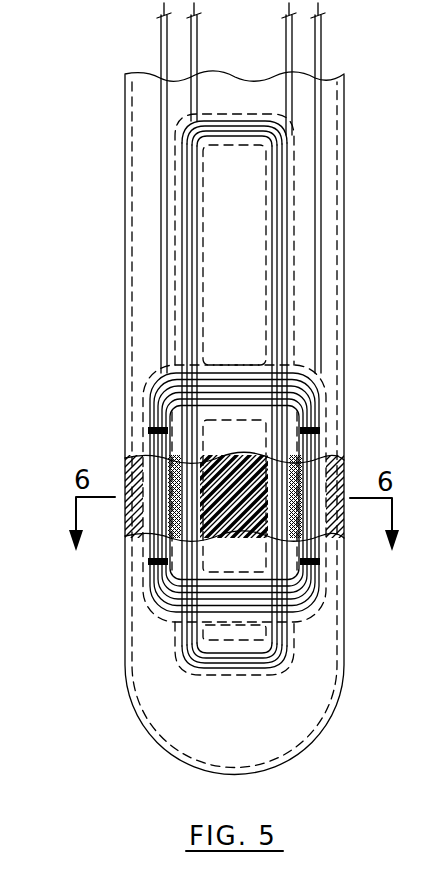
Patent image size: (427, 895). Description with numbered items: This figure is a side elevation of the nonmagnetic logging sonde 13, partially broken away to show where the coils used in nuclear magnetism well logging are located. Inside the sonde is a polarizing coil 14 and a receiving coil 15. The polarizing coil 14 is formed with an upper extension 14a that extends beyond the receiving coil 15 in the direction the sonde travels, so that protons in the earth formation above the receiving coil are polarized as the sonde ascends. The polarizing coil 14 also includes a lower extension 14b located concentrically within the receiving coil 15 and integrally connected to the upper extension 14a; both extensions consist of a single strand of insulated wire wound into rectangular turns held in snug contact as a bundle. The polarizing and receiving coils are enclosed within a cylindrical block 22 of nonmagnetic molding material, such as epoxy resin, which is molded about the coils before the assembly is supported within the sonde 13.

The nonmagnetic logging sonde 13 is at (346, 312).
The polarizing coil 14 is at (192, 243).
The upper extension 14a is at (190, 163).
The lower extension 14b is at (178, 641).
The receiving coil 15 is at (150, 423).
The cylindrical block 22 is at (249, 472).